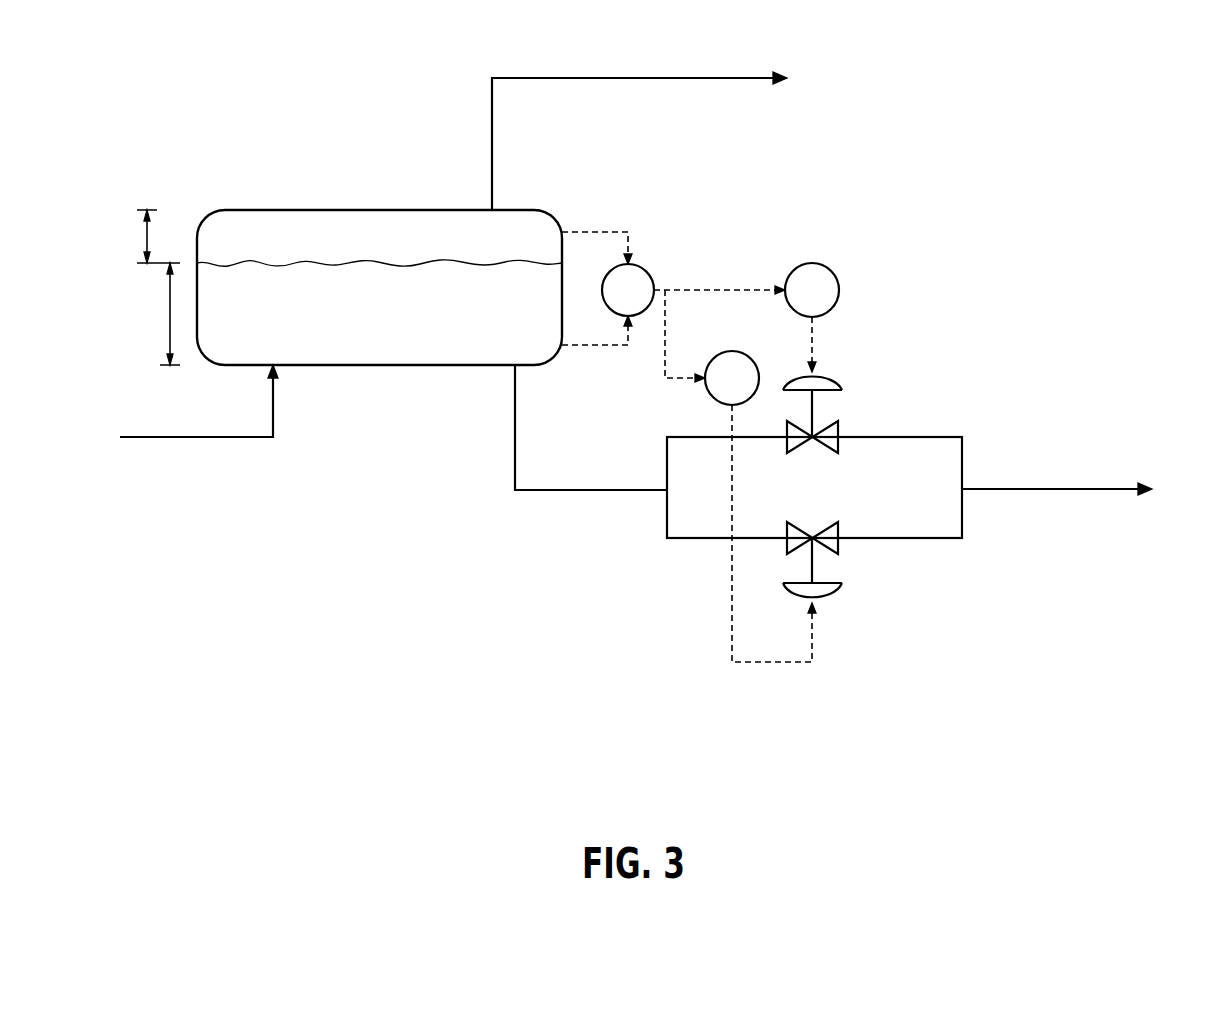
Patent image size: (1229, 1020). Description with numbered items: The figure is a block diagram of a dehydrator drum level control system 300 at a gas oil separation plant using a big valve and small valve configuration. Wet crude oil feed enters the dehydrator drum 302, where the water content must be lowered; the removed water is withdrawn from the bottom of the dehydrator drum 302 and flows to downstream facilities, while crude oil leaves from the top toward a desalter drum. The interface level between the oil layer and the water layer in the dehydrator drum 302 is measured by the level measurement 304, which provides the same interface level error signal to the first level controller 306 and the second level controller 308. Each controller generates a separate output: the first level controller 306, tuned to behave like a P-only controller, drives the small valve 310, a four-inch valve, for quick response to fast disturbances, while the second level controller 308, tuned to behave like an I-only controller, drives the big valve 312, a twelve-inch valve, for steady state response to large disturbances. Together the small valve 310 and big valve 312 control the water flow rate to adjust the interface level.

The dehydrator drum level control system 300 is at (1138, 742).
The dehydrator drum 302 is at (358, 196).
The level measurement 304 is at (654, 246).
The first level controller 306 is at (822, 254).
The second level controller 308 is at (696, 402).
The small valve 310 is at (844, 404).
The big valve 312 is at (842, 498).